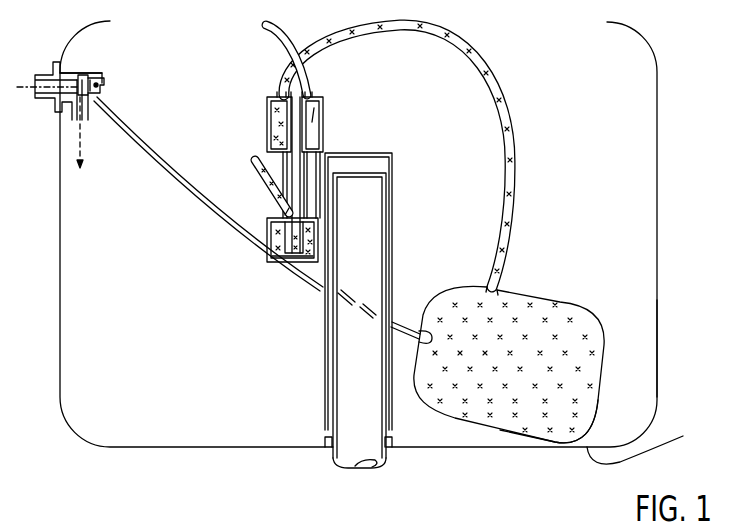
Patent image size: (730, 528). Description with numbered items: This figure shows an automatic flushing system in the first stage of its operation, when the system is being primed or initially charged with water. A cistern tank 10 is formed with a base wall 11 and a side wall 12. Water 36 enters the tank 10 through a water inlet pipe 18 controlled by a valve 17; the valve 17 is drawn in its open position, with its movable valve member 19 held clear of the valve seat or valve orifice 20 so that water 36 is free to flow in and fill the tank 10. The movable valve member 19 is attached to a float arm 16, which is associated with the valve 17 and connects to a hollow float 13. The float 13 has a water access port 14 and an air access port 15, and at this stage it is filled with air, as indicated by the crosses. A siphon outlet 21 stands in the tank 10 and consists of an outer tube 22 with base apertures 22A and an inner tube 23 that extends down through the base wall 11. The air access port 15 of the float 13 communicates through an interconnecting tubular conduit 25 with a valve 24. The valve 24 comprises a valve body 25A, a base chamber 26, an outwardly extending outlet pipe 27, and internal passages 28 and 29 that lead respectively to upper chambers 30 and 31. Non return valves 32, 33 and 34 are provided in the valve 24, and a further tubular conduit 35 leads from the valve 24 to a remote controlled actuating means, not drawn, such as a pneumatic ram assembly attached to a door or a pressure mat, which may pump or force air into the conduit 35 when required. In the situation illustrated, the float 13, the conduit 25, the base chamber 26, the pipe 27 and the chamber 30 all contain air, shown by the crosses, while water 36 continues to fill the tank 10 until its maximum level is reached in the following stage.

The cistern tank 10 is at (659, 148).
The base wall 11 is at (650, 444).
The side wall 12 is at (657, 346).
The hollow float 13 is at (538, 297).
The water access port 14 is at (533, 432).
The air access port 15 is at (490, 290).
The float arm 16 is at (315, 286).
The valve 17 is at (98, 78).
The water inlet pipe 18 is at (47, 97).
The movable valve member 19 is at (92, 78).
The valve seat 20 is at (72, 72).
The siphon outlet 21 is at (374, 305).
The outer tube 22 is at (354, 300).
The base apertures 22A is at (320, 436).
The inner tube 23 is at (380, 260).
The valve 24 is at (305, 176).
The tubular conduit 25 is at (515, 170).
The valve body 25A is at (255, 150).
The base chamber 26 is at (270, 243).
The outlet pipe 27 is at (272, 190).
The internal passage 28 is at (278, 208).
The internal passage 29 is at (300, 175).
The upper chamber 30 is at (268, 112).
The upper chamber 31 is at (310, 100).
The non return valve 32 is at (290, 265).
The non return valve 33 is at (267, 133).
The non return valve 34 is at (320, 137).
The tubular conduit 35 is at (280, 42).
The water 36 is at (85, 152).